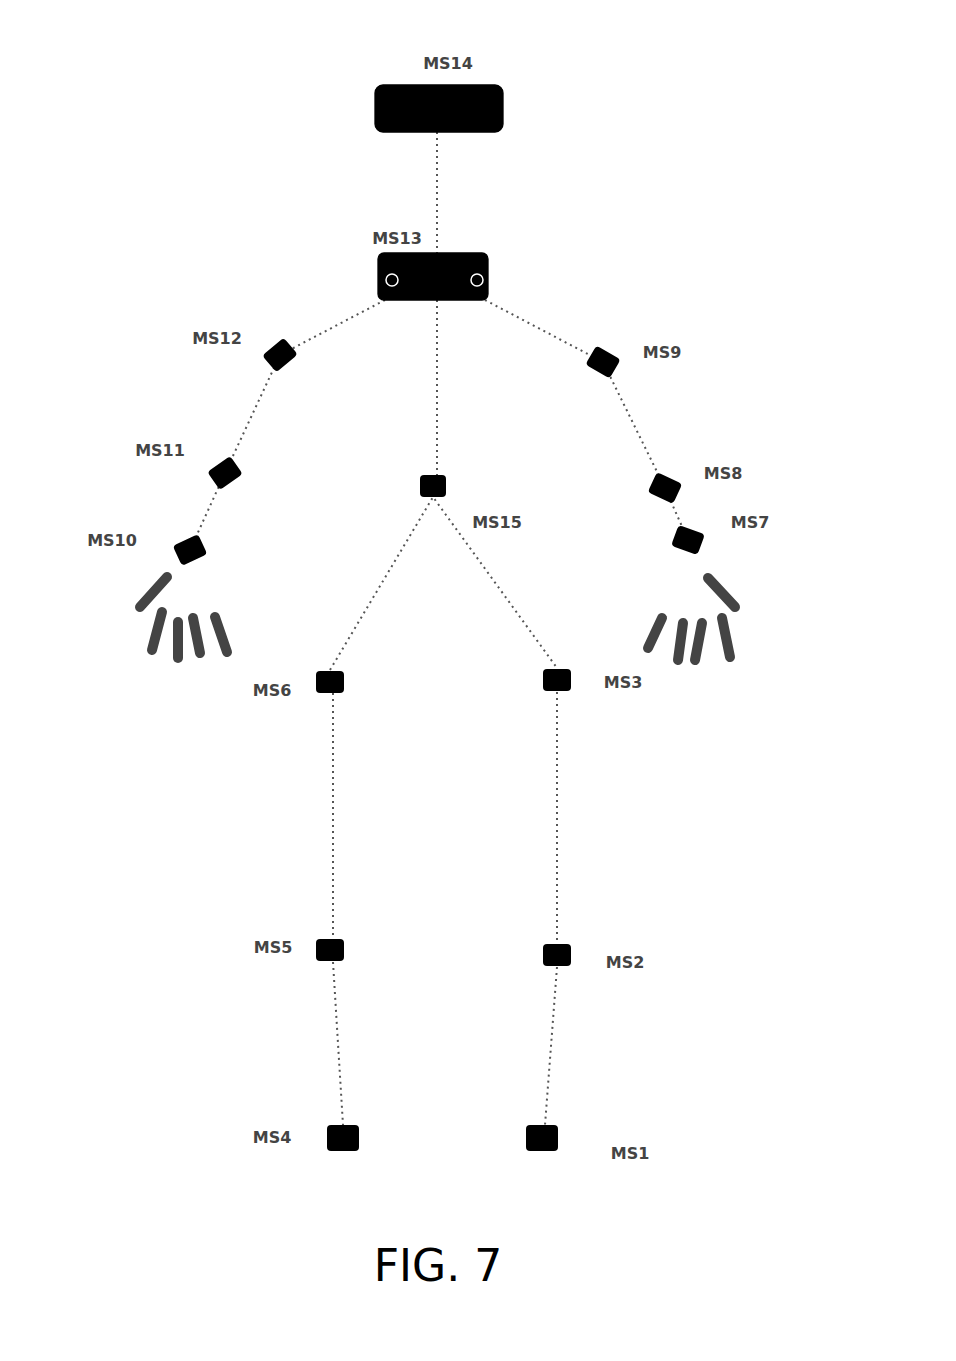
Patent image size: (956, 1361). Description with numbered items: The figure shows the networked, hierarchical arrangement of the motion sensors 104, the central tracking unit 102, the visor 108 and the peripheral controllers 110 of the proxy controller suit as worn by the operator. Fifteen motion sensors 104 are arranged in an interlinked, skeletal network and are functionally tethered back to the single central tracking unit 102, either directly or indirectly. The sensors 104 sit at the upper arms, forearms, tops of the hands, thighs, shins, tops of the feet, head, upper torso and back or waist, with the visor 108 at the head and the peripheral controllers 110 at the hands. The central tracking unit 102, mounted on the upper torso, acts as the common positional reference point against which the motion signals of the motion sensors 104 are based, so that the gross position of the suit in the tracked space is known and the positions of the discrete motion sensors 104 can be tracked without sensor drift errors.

The central tracking unit 102 is at (378, 270).
The motion sensors 104 is at (427, 85).
The visor 108 is at (495, 110).
The peripheral controllers 110 is at (145, 590).